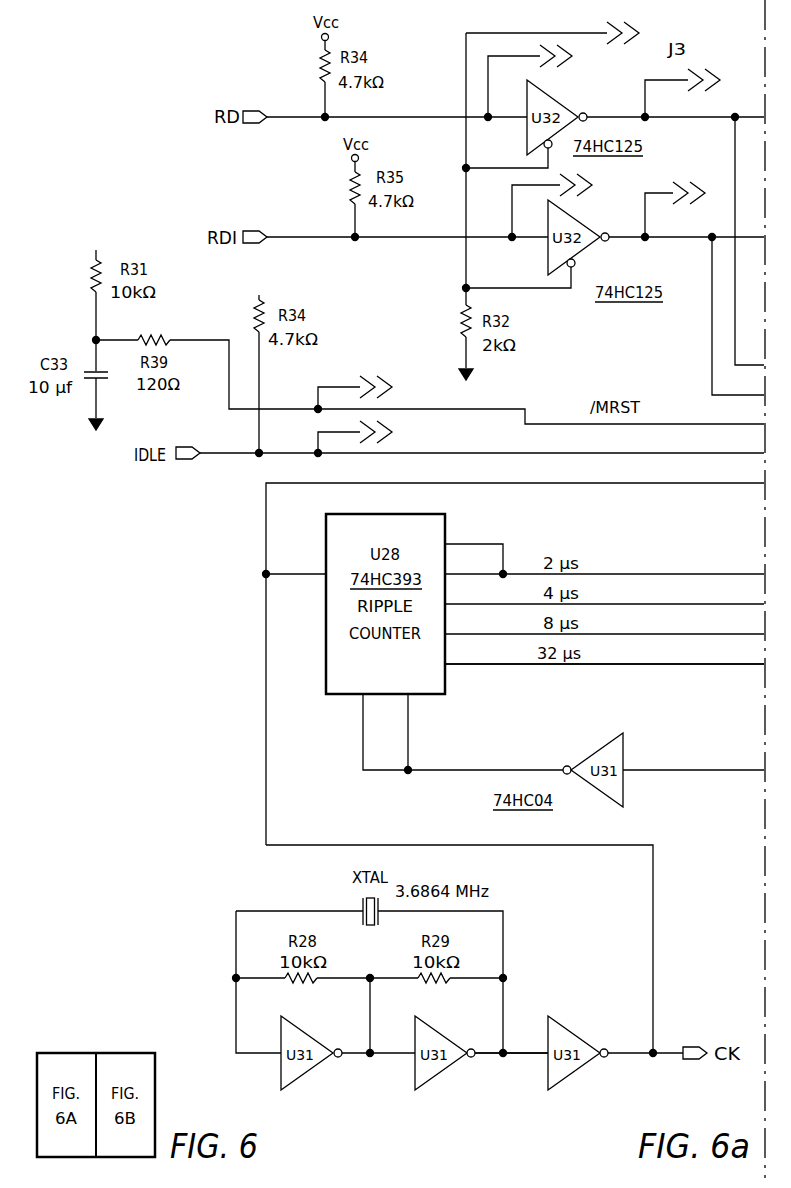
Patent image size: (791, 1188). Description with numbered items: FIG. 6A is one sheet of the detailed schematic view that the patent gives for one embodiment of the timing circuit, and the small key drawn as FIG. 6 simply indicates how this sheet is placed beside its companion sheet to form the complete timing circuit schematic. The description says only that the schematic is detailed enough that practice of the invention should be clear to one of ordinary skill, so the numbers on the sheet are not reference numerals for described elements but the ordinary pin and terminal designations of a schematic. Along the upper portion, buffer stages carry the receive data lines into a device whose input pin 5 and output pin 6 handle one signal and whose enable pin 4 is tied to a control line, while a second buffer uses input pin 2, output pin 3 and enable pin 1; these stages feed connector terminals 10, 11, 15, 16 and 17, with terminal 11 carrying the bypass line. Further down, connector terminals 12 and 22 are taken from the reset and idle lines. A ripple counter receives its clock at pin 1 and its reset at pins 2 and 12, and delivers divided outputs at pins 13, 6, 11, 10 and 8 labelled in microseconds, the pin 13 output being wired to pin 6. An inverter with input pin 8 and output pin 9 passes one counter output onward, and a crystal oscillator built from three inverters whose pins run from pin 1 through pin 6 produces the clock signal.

The pin 1 (U32 enable / U28 clock input / U31 input) 1 is at (403, 654).
The pin 2 (U32 input / U28 reset / U31 output) 2 is at (455, 633).
The pin 3 (U32 output / U31 input) 3 is at (508, 634).
The pin 4 (U32 enable / U31 output) 4 is at (496, 600).
The pin 5 (U32 input / U31 input) 5 is at (525, 574).
The pin 6 (U32 output / U28 2us output / U31 output) 6 is at (604, 573).
The pin 8 (U28 32us output / U31 input) 8 is at (604, 706).
The pin 9 U31 output 9 is at (693, 760).
The J3 connector pin 10 is at (541, 81).
The J3 connector pin 11 (BYPASS) 11 is at (564, 28).
The J3 connector pin 12 is at (366, 381).
The U28 pin 13 is at (474, 548).
The J3 connector pin 15 is at (686, 209).
The J3 connector pin 16 is at (563, 205).
The J3 connector pin 17 is at (694, 93).
The J3 connector pin 22 is at (382, 437).